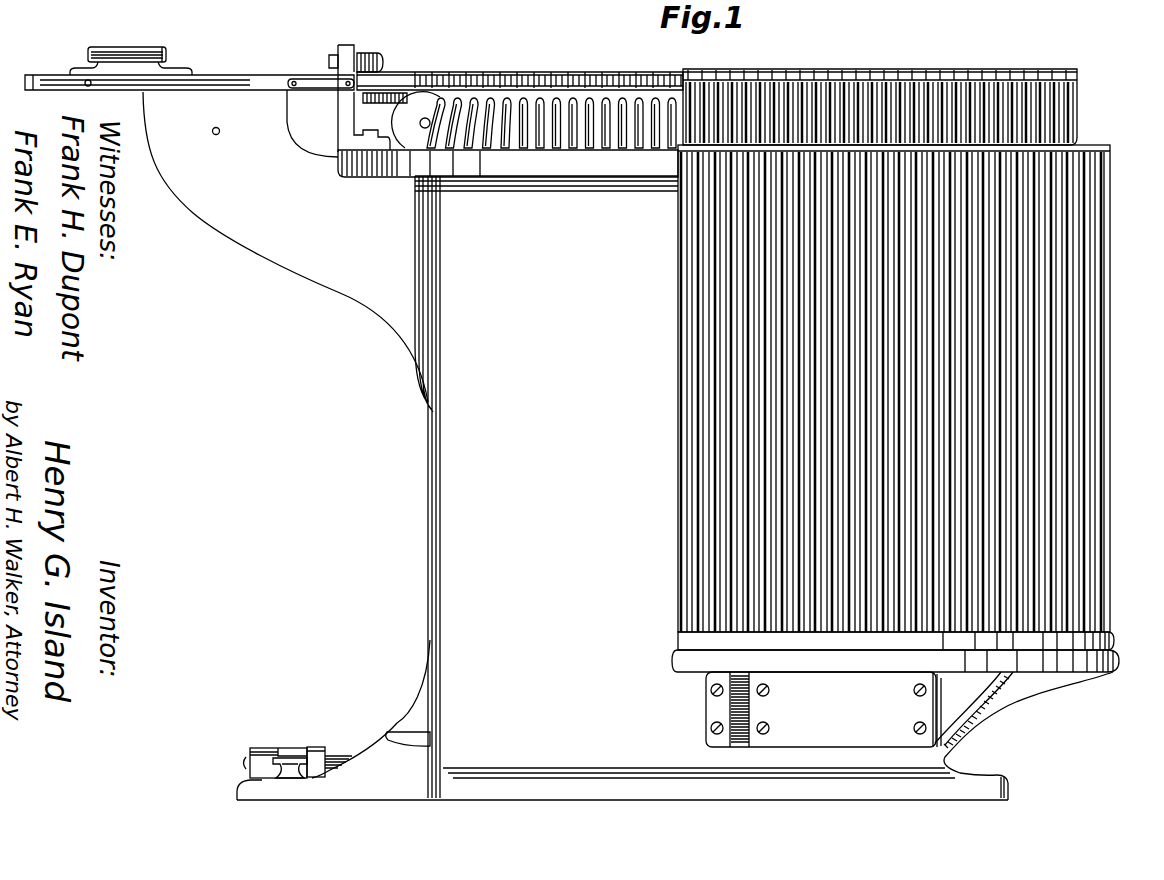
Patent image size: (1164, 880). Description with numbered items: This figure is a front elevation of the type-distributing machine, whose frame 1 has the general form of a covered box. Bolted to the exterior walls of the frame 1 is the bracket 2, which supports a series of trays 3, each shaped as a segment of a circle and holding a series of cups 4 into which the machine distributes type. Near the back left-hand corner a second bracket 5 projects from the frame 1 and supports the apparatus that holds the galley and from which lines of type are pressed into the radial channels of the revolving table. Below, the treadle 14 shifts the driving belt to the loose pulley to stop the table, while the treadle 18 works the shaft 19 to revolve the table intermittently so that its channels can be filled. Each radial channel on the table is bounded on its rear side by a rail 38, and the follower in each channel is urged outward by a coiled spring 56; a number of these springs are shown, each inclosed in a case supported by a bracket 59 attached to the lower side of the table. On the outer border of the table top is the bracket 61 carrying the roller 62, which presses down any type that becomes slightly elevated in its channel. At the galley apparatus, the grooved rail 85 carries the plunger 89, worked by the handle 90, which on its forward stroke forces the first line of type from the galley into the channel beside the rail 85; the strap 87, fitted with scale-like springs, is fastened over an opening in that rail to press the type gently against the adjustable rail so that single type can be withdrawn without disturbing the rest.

The frame 1 is at (675, 488).
The bracket 2 is at (895, 661).
The trays 3 is at (681, 561).
The cups 4 is at (690, 488).
The bracket 5 is at (286, 435).
The treadle 14 is at (406, 739).
The treadle 18 is at (276, 754).
The shaft 19 is at (331, 757).
The rail 38 is at (520, 87).
The coiled spring 56 is at (508, 134).
The bracket 59 is at (430, 123).
The bracket 61 is at (364, 98).
The roller 62 is at (356, 53).
The grooved rail 85 is at (184, 90).
The strap 87 is at (320, 88).
The plunger 89 is at (131, 69).
The handle 90 is at (127, 45).